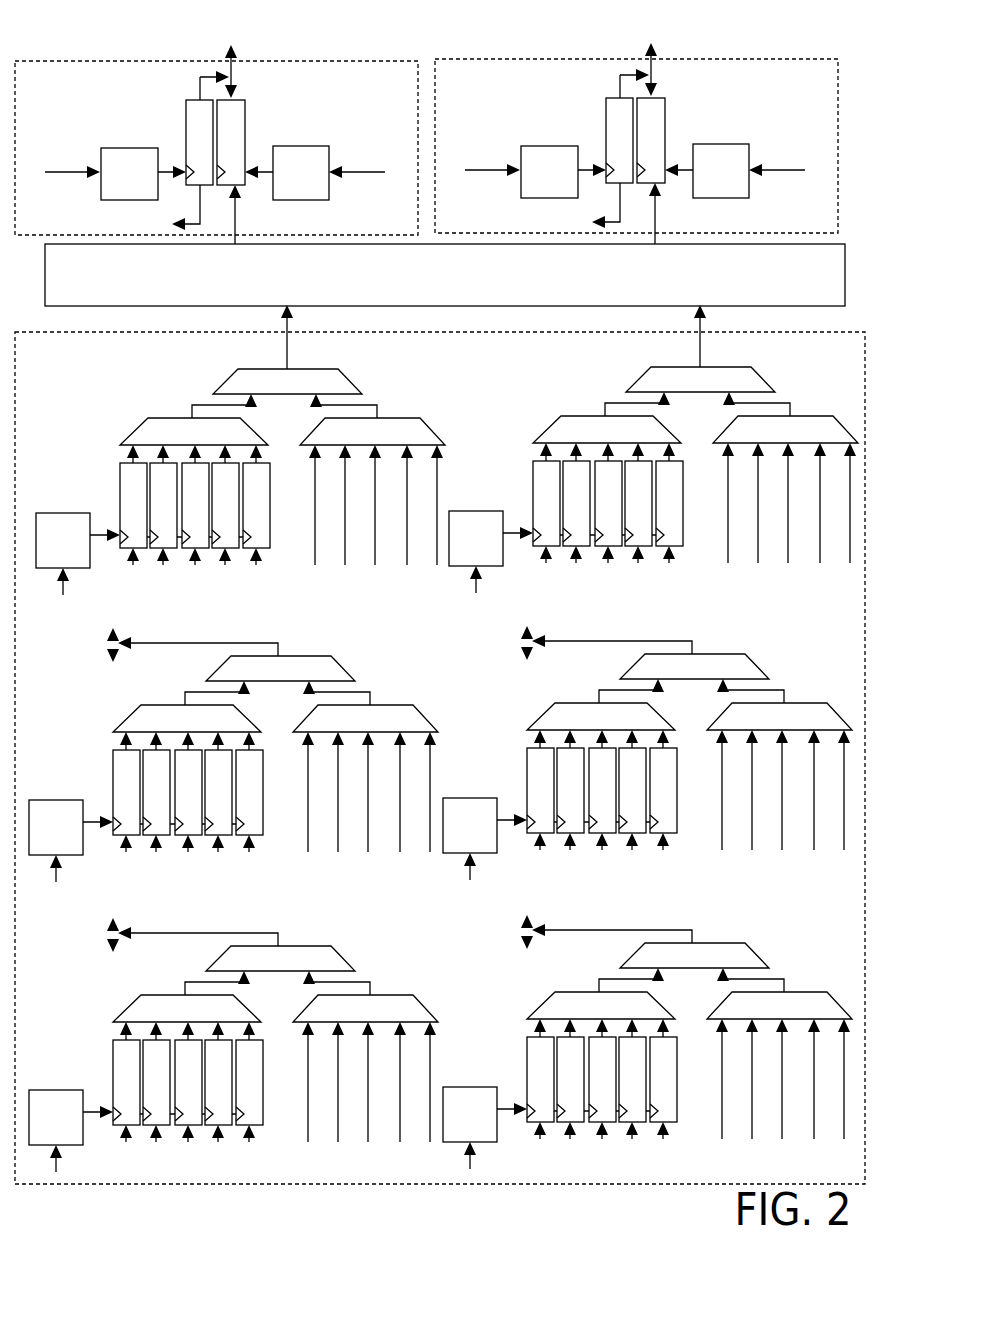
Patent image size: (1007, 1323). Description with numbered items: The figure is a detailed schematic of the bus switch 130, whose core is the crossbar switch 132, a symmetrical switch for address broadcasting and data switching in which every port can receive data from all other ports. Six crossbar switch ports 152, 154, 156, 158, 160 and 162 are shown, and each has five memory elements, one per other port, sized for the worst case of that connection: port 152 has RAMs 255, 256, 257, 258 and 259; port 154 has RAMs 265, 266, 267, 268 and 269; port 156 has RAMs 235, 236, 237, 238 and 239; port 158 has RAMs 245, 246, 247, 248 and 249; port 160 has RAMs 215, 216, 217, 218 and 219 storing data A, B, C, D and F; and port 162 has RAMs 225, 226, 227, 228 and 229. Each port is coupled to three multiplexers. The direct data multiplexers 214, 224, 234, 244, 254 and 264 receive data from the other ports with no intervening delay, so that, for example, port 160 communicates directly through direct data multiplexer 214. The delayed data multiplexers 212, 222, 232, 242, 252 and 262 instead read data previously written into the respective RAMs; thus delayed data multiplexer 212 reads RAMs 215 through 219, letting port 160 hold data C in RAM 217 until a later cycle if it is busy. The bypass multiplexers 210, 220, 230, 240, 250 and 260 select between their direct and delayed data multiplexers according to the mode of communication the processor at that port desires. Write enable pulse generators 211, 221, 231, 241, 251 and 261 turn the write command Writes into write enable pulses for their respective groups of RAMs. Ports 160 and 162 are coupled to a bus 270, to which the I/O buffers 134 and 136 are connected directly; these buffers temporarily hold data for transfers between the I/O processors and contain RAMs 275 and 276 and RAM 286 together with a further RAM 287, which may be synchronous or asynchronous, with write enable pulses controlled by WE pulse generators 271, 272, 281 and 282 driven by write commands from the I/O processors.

The bus switch 130 is at (18, 26).
The crossbar switch 132 is at (36, 326).
The I/O buffer 134 is at (33, 100).
The I/O buffer 136 is at (636, 132).
The crossbar switch port 152 is at (186, 927).
The crossbar switch port 154 is at (600, 924).
The crossbar switch port 156 is at (186, 637).
The crossbar switch port 158 is at (600, 635).
The crossbar switch port 160 is at (285, 303).
The crossbar switch port 162 is at (695, 303).
The bypass multiplexer 210 is at (272, 389).
The WE pulse generator 211 is at (63, 513).
The delayed data multiplexer 212 is at (166, 440).
The direct data multiplexer 214 is at (357, 440).
The RAM 215 is at (121, 549).
The RAM 216 is at (151, 549).
The RAM 217 is at (183, 549).
The RAM 218 is at (213, 549).
The RAM 219 is at (244, 549).
The bypass multiplexer 220 is at (700, 379).
The WE pulse generator 221 is at (476, 527).
The delayed data multiplexer 222 is at (607, 429).
The direct data multiplexer 224 is at (785, 429).
The RAM 225 is at (548, 526).
The RAM 226 is at (578, 526).
The RAM 227 is at (610, 526).
The RAM 228 is at (640, 526).
The RAM 229 is at (671, 526).
The bypass multiplexer 230 is at (280, 668).
The WE pulse generator 231 is at (56, 816).
The delayed data multiplexer 232 is at (187, 718).
The direct data multiplexer 234 is at (365, 718).
The RAM 235 is at (128, 815).
The RAM 236 is at (158, 815).
The RAM 237 is at (190, 815).
The RAM 238 is at (220, 815).
The RAM 239 is at (251, 815).
The bypass multiplexer 240 is at (694, 666).
The WE pulse generator 241 is at (470, 814).
The delayed data multiplexer 242 is at (601, 716).
The direct data multiplexer 244 is at (779, 716).
The RAM 245 is at (542, 813).
The RAM 246 is at (572, 813).
The RAM 247 is at (604, 813).
The RAM 248 is at (634, 813).
The RAM 249 is at (665, 813).
The bypass multiplexer 250 is at (280, 958).
The WE pulse generator 251 is at (56, 1106).
The delayed data multiplexer 252 is at (187, 1008).
The direct data multiplexer 254 is at (365, 1008).
The RAM 255 is at (128, 1105).
The RAM 256 is at (158, 1105).
The RAM 257 is at (190, 1105).
The RAM 258 is at (220, 1105).
The RAM 259 is at (251, 1105).
The bypass multiplexer 260 is at (694, 955).
The WE pulse generator 261 is at (470, 1103).
The delayed data multiplexer 262 is at (601, 1005).
The direct data multiplexer 264 is at (779, 1005).
The RAM 265 is at (542, 1102).
The RAM 266 is at (572, 1102).
The RAM 267 is at (604, 1102).
The RAM 268 is at (634, 1102).
The RAM 269 is at (665, 1102).
The bus 270 is at (460, 286).
The WE pulse generator 271 is at (129, 148).
The WE pulse generator 272 is at (301, 146).
The RAM 275 is at (186, 125).
The RAM 276 is at (245, 125).
The WE pulse generator 281 is at (549, 153).
The WE pulse generator 282 is at (721, 159).
The RAM 286 is at (667, 127).
The RAM 287 is at (593, 127).